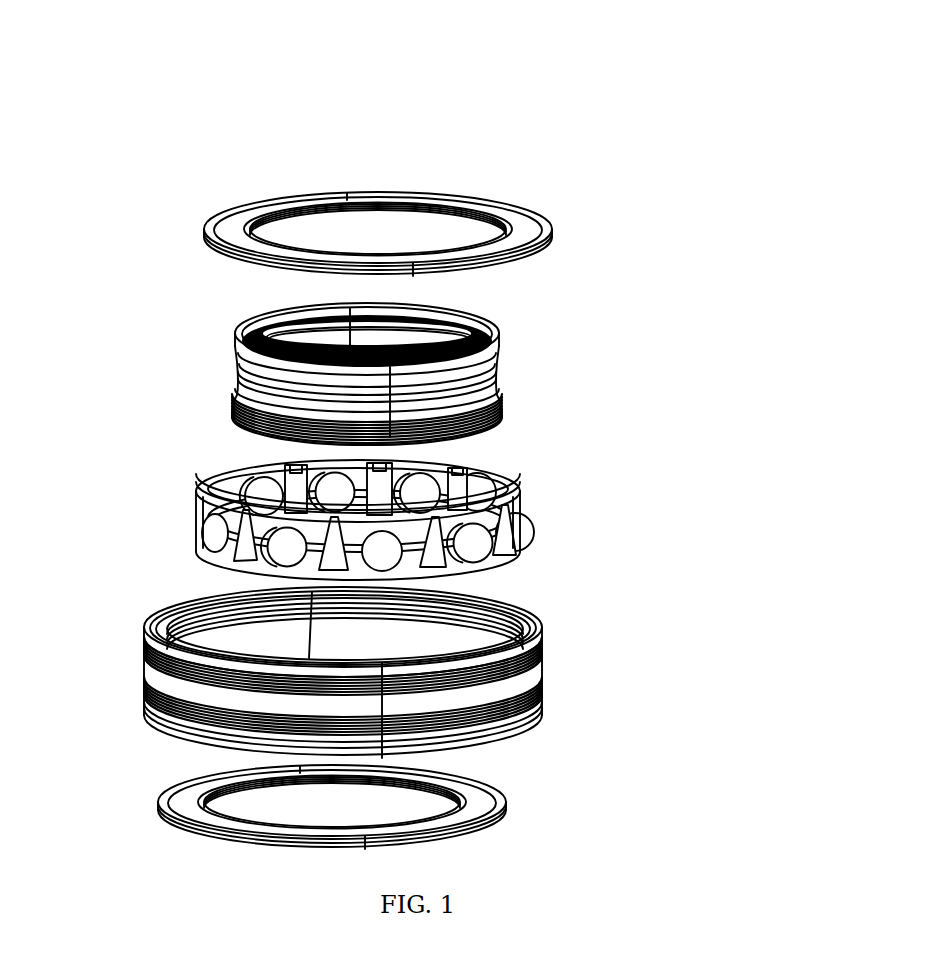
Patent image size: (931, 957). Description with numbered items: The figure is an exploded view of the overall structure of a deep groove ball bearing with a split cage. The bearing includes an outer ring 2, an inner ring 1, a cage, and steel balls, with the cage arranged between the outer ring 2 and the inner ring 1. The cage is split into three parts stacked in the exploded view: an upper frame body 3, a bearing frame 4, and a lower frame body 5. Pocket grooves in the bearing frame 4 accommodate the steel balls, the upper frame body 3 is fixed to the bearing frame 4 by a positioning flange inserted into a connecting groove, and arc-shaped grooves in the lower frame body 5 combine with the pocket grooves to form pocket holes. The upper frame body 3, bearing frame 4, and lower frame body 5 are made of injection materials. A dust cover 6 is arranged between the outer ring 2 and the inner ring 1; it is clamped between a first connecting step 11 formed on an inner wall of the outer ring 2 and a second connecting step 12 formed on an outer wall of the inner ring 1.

The inner ring 1 is at (466, 267).
The first connecting step 11 is at (464, 228).
The outer ring 2 is at (400, 623).
The second connecting step 12 is at (188, 598).
The upper frame body 3 is at (461, 411).
The bearing frame 4 is at (457, 442).
The lower frame body 5 is at (480, 481).
The dust cover 6 is at (464, 424).